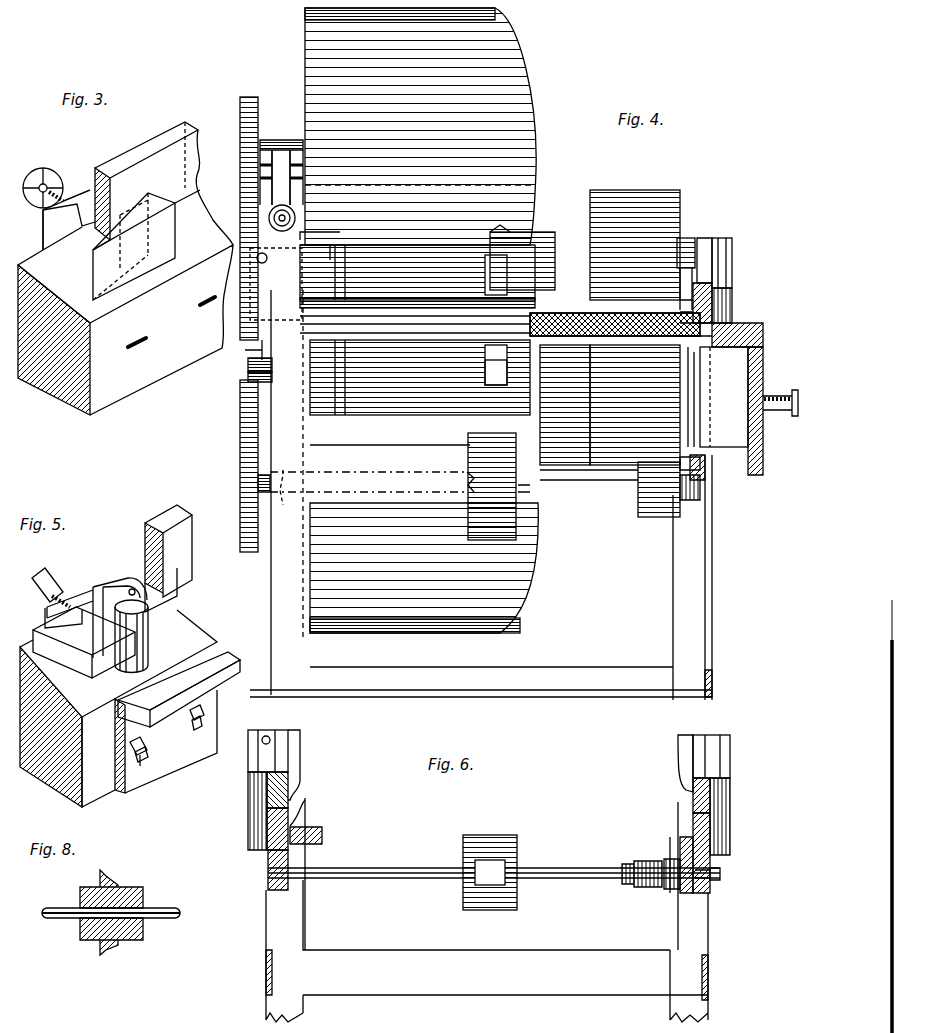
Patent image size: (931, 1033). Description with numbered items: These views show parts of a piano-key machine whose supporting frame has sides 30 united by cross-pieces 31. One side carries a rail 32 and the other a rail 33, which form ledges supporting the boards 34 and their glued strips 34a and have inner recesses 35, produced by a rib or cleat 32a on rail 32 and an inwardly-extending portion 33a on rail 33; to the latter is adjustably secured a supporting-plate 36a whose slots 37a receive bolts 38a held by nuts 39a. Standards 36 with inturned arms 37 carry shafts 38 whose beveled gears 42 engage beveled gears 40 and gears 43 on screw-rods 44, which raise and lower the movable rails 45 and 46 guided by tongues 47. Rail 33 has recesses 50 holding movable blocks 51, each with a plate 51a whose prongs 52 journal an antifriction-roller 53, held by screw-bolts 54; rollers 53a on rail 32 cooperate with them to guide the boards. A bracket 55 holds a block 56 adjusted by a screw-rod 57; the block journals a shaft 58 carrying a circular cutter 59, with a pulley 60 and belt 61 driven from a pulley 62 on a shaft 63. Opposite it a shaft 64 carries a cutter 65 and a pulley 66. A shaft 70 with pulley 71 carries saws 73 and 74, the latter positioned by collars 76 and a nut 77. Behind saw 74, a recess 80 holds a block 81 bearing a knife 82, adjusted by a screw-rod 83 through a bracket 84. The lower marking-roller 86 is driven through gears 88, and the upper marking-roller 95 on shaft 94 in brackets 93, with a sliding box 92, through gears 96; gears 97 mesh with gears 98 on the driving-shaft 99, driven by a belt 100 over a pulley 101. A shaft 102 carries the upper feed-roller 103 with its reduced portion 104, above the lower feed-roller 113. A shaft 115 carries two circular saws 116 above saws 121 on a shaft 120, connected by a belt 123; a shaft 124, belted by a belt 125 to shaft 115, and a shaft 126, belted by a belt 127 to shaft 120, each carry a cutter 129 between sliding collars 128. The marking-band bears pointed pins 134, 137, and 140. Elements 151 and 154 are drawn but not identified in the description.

In FIG. 4, the sides of the supporting frame 30 is at (271, 573).
In FIG. 6, the sides of the supporting frame 30 is at (487, 951).
In FIG. 4, the cross-pieces 31 is at (470, 700).
In FIG. 6, the cross-pieces 31 is at (534, 973).
In FIG. 4, the rail 32 is at (240, 345).
In FIG. 6, the rail 32 is at (268, 826).
In FIG. 6, the rib or cleat 32a is at (325, 836).
In FIG. 3, the rail 33 is at (125, 302).
In FIG. 5, the rail 33 is at (118, 708).
In FIG. 6, the rail 33 is at (732, 830).
In FIG. 3, the inwardly-extending portion 33a is at (123, 308).
In FIG. 5, the inwardly-extending portion 33a is at (216, 640).
In FIG. 4, the inwardly-extending portion 33a is at (620, 410).
In FIG. 6, the inwardly-extending portion 33a is at (676, 845).
In FIG. 4, the boards 34 is at (615, 338).
In FIG. 4, the strips 34a is at (638, 312).
In FIG. 3, the recess 35 is at (61, 357).
In FIG. 5, the recess 35 is at (178, 604).
In FIG. 6, the recess 35 is at (305, 800).
In FIG. 4, the standard 36 is at (310, 240).
In FIG. 5, the supporting-plate 36a is at (179, 689).
In FIG. 4, the supporting-plate 36a is at (629, 418).
In FIG. 6, the inturned apertured arm 37 is at (300, 753).
In FIG. 5, the slots 37a is at (197, 732).
In FIG. 4, the shafts 38 is at (493, 255).
In FIG. 3, the bolts 38a is at (140, 341).
In FIG. 5, the bolts 38a is at (132, 745).
In FIG. 5, the nuts 39a is at (150, 750).
In FIG. 4, the nuts 39a is at (646, 357).
In FIG. 4, the beveled gear 40 is at (248, 240).
In FIG. 4, the beveled gear 42 is at (305, 240).
In FIG. 4, the beveled gears 43 is at (340, 212).
In FIG. 4, the screw-rods 44 is at (276, 284).
In FIG. 4, the movable rail 45 is at (284, 603).
In FIG. 6, the movable rail 45 is at (250, 792).
In FIG. 3, the movable rail 46 is at (164, 183).
In FIG. 5, the movable rail 46 is at (168, 551).
In FIG. 4, the movable rail 46 is at (722, 295).
In FIG. 6, the movable rail 46 is at (712, 790).
In FIG. 4, the tongues 47 is at (722, 245).
In FIG. 6, the tongues 47 is at (288, 733).
In FIG. 5, the recesses 50 is at (60, 611).
In FIG. 5, the movable block 51 is at (52, 620).
In FIG. 5, the plate 51a is at (84, 642).
In FIG. 5, the prongs 52 is at (112, 583).
In FIG. 5, the antifriction-roller 53 is at (146, 638).
In FIG. 4, the antifriction-rollers 53a is at (265, 340).
In FIG. 5, the screw-bolts 54 is at (32, 576).
In FIG. 4, the bracket or portion 55 is at (765, 370).
In FIG. 4, the block 56 is at (724, 397).
In FIG. 4, the screw-rod 57 is at (782, 416).
In FIG. 4, the shaft 58 is at (698, 438).
In FIG. 4, the circular cutter 59 is at (712, 316).
In FIG. 4, the pulley 60 is at (712, 490).
In FIG. 4, the belt 61 is at (676, 463).
In FIG. 4, the pulley 62 is at (650, 517).
In FIG. 4, the shaft 63 is at (575, 485).
In FIG. 4, the shaft 64 is at (258, 425).
In FIG. 4, the circular cutter 65 is at (258, 336).
In FIG. 4, the pulley 66 is at (289, 503).
In FIG. 6, the shaft 70 is at (395, 864).
In FIG. 6, the pulley 71 is at (490, 872).
In FIG. 6, the circular saw 73 is at (308, 815).
In FIG. 6, the circular saw 74 is at (676, 802).
In FIG. 6, the collars 76 is at (660, 887).
In FIG. 6, the nut 77 is at (716, 882).
In FIG. 3, the recess 80 is at (45, 222).
In FIG. 3, the block 81 is at (90, 200).
In FIG. 3, the knife or chisel 82 is at (134, 246).
In FIG. 3, the screw-rod 83 is at (50, 180).
In FIG. 4, the screw-rod 83 is at (765, 325).
In FIG. 3, the bracket 84 is at (55, 235).
In FIG. 4, the lower marking-roller 86 is at (424, 568).
In FIG. 4, the gears 88 is at (240, 375).
In FIG. 4, the sliding box 92 is at (248, 215).
In FIG. 4, the bracket 93 is at (285, 180).
In FIG. 4, the shaft 94 is at (300, 140).
In FIG. 4, the upper marking-roller 95 is at (420, 126).
In FIG. 4, the gear 96 is at (250, 97).
In FIG. 4, the gears 97 is at (240, 545).
In FIG. 4, the gears 98 is at (244, 500).
In FIG. 4, the driving-shaft 99 is at (525, 492).
In FIG. 4, the belt 100 is at (501, 459).
In FIG. 4, the pulley 101 is at (492, 518).
In FIG. 4, the shaft 102 is at (688, 238).
In FIG. 4, the upper feed roller 103 is at (530, 261).
In FIG. 4, the reduced portion 104 is at (635, 327).
In FIG. 4, the lower feed roller 113 is at (565, 405).
In FIG. 4, the shaft 115 is at (405, 270).
In FIG. 4, the circular saws 116 is at (350, 245).
In FIG. 4, the shaft 120 is at (420, 375).
In FIG. 4, the circular saws 121 is at (350, 415).
In FIG. 4, the belt 123 is at (262, 372).
In FIG. 8, the shaft 124 is at (57, 908).
In FIG. 4, the shaft 124 is at (548, 300).
In FIG. 4, the belt 125 is at (520, 245).
In FIG. 4, the shaft 126 is at (476, 350).
In FIG. 4, the belt 127 is at (496, 380).
In FIG. 8, the sliding collars 128 is at (92, 928).
In FIG. 8, the cutter 129 is at (112, 882).
In FIG. 4, the pointed pins 134 is at (308, 20).
In FIG. 4, the pointed pins 137 is at (388, 10).
In FIG. 4, the pointed pins 140 is at (345, 12).
In FIG. 4, the drum head 151 is at (455, 10).
In FIG. 4, the drum strips 154 is at (492, 632).